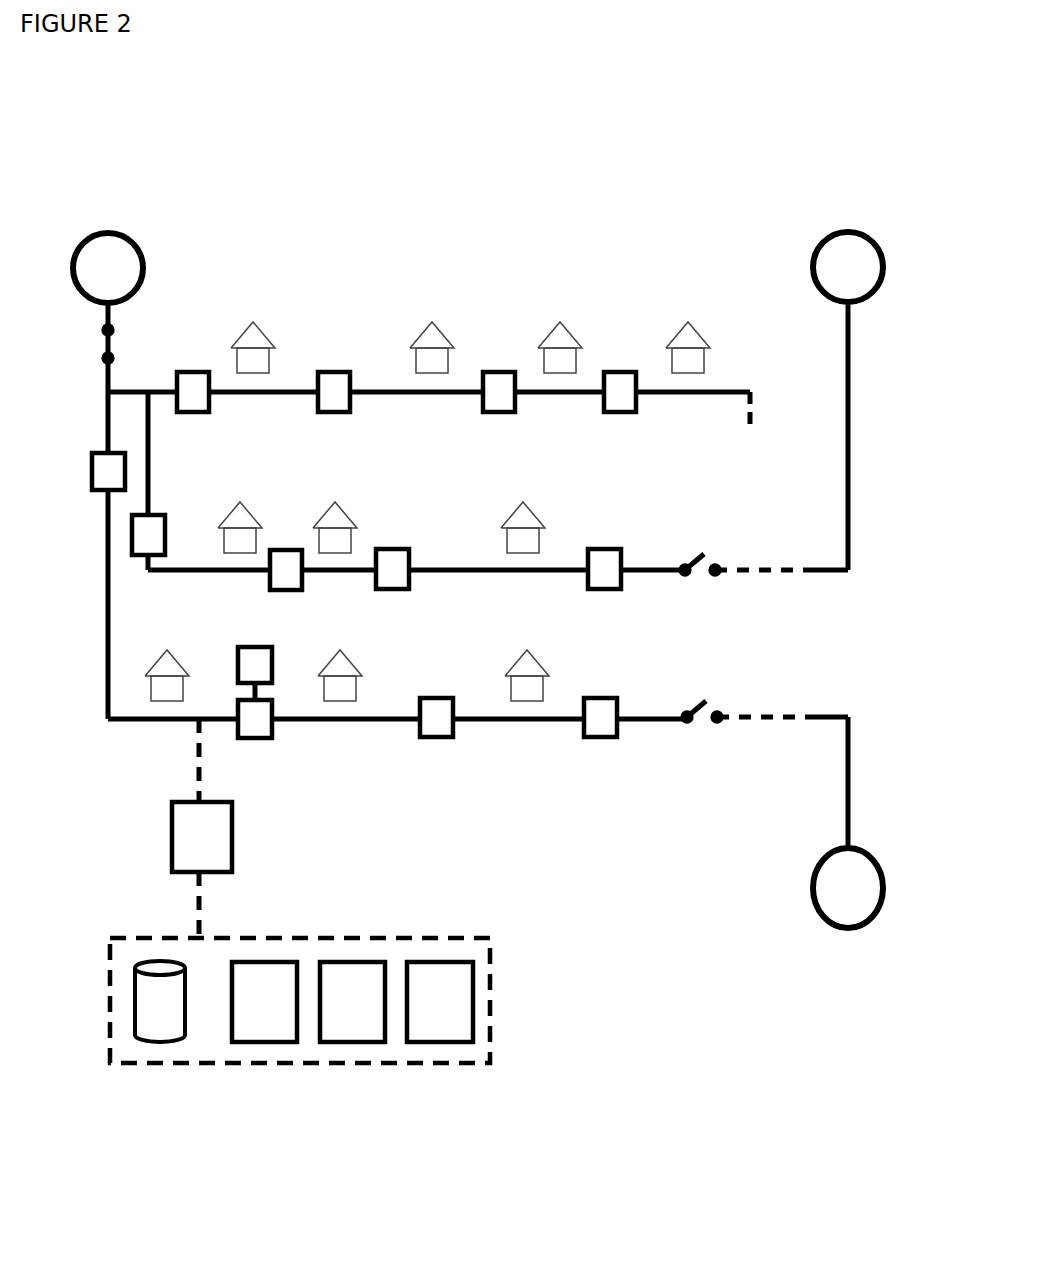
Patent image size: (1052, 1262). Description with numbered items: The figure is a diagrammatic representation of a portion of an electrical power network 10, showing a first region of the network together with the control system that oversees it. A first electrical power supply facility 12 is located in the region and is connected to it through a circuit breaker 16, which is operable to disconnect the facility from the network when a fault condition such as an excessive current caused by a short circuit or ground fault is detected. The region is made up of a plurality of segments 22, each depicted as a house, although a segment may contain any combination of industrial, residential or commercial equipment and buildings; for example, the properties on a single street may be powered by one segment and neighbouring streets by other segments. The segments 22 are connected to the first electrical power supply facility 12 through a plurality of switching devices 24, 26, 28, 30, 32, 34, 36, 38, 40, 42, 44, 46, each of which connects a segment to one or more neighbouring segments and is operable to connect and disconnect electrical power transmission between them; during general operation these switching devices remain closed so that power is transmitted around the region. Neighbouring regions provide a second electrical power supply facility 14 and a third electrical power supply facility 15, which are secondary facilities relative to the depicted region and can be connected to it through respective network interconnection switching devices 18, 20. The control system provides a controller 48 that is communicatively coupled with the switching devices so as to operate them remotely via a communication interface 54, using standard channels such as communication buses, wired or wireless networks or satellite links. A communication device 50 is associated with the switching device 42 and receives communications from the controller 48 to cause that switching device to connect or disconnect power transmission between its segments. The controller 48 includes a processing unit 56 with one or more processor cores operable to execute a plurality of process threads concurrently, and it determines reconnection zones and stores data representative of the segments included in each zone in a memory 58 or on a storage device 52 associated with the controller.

The electrical power network 10 is at (382, 194).
The first electrical power supply facility 12 is at (118, 252).
The second electrical power supply facility 14 is at (838, 268).
The third electrical power supply facility 15 is at (828, 895).
The circuit breaker 16 is at (105, 332).
The network interconnection switching device 18 is at (715, 568).
The network interconnection switching device 20 is at (707, 720).
The segment 22 is at (430, 338).
The switching device 24 is at (195, 378).
The switching device 26 is at (336, 390).
The switching device 28 is at (503, 378).
The switching device 30 is at (625, 378).
The switching device 32 is at (145, 535).
The switching device 34 is at (290, 570).
The switching device 36 is at (395, 572).
The switching device 38 is at (605, 572).
The switching device 40 is at (110, 473).
The switching device 42 is at (256, 722).
The switching device 44 is at (440, 720).
The switching device 46 is at (605, 725).
The controller 48 is at (220, 828).
The communication device 50 is at (255, 665).
The storage device 52 is at (160, 1027).
The communication interface 54 is at (270, 1015).
The processing unit 56 is at (365, 1027).
The memory 58 is at (449, 1006).